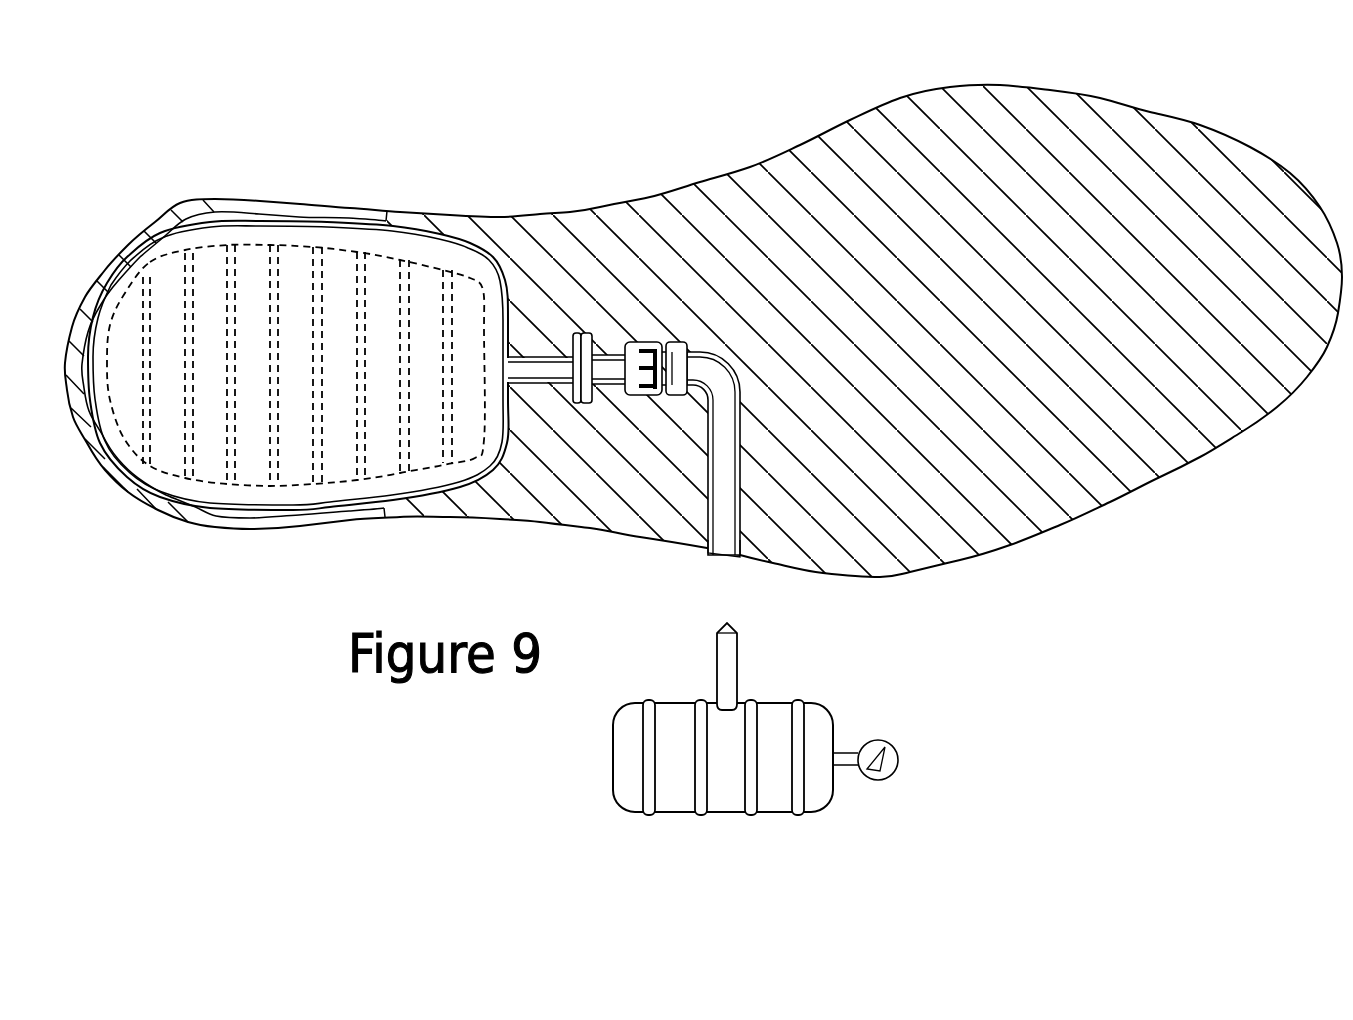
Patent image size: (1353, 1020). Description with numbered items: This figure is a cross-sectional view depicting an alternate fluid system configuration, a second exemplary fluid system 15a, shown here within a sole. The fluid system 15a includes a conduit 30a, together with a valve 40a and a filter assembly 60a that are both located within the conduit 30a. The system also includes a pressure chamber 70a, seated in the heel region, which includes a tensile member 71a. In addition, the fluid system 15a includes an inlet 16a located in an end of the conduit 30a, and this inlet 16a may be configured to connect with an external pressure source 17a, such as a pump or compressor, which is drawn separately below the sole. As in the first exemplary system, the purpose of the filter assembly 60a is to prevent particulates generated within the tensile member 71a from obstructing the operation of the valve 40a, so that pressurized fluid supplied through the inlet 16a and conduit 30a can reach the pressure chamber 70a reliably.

The fluid system 15a is at (750, 366).
The inlet 16a is at (722, 554).
The external pressure source 17a is at (826, 708).
The conduit 30a is at (613, 356).
The valve 40a is at (648, 349).
The filter assembly 60a is at (581, 406).
The pressure chamber 70a is at (298, 329).
The tensile member 71a is at (342, 237).